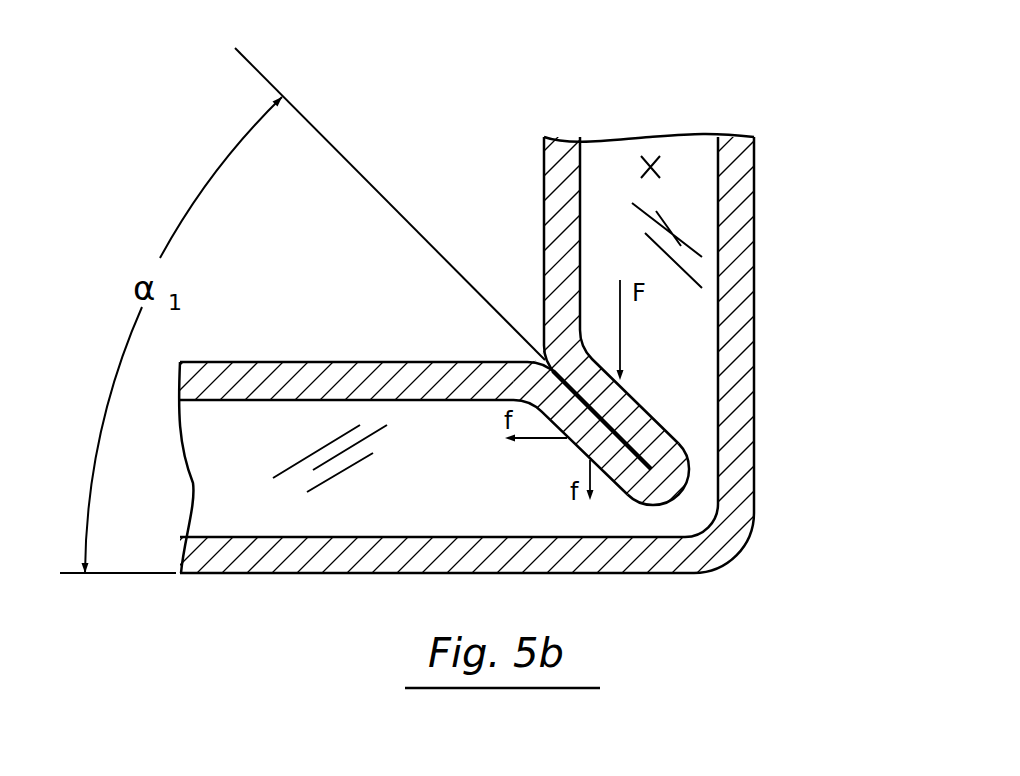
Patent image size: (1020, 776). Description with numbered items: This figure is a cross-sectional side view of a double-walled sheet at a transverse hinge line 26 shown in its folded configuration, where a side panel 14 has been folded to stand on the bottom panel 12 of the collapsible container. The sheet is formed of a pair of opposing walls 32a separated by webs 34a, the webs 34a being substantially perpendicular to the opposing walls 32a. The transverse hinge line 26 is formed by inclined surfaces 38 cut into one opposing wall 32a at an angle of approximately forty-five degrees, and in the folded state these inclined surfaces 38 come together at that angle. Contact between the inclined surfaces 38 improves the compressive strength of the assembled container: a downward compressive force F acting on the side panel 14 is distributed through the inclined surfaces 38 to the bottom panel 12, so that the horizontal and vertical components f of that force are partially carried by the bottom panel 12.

The bottom panel 12 is at (316, 574).
The side panel 14 is at (757, 230).
The opposing wall 32a is at (543, 207).
The web 34a is at (651, 154).
The inclined surface 38 is at (613, 427).
The transverse hinge line 26 is at (657, 453).